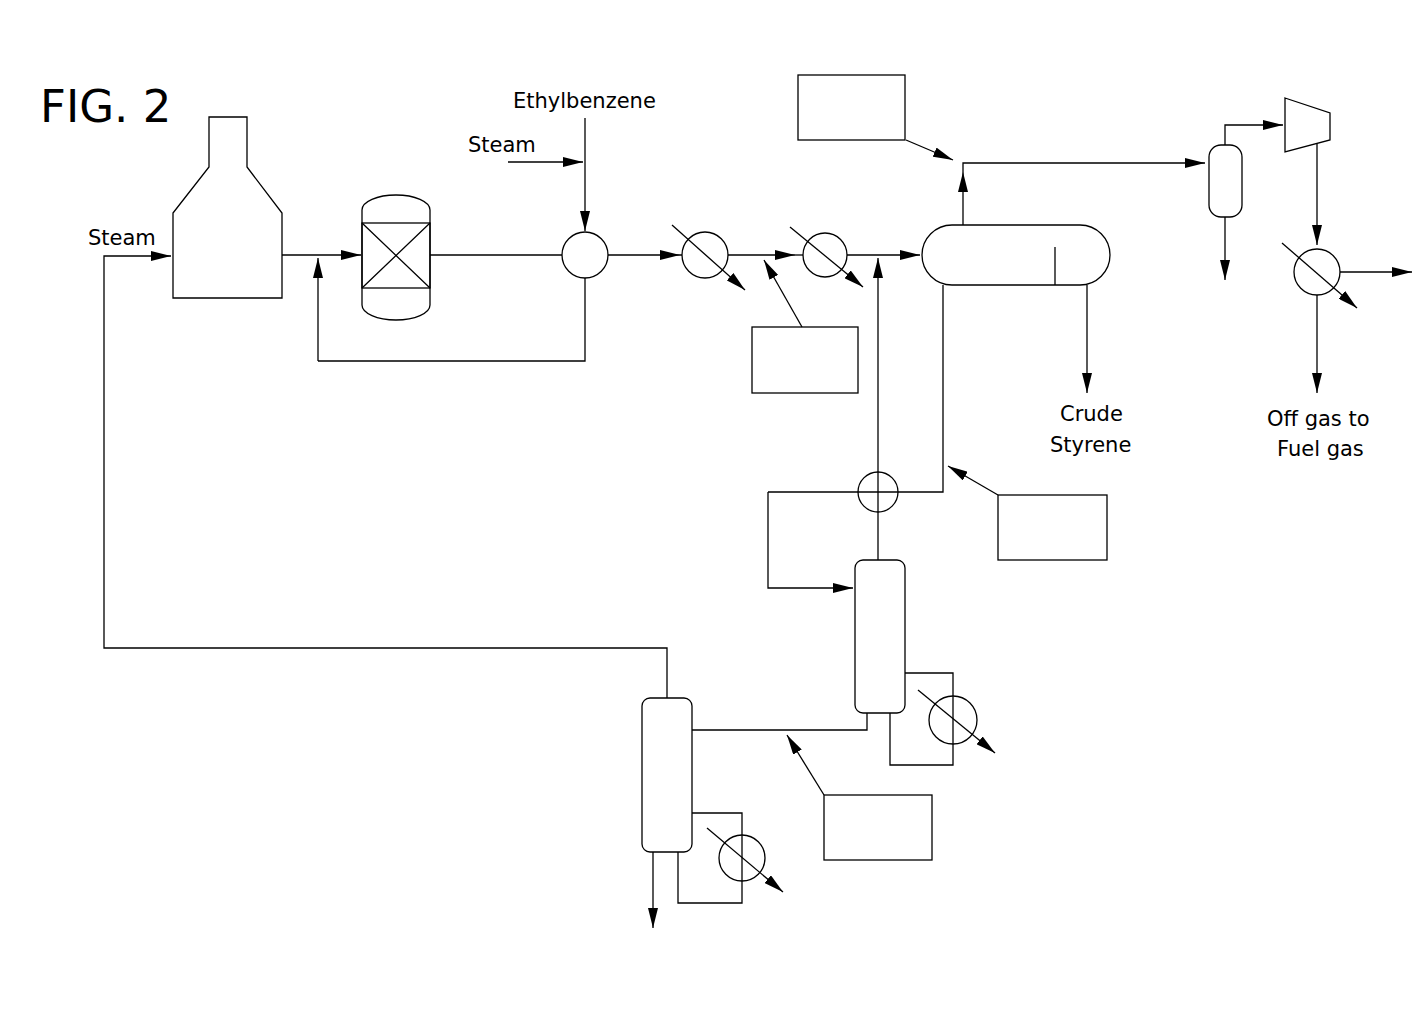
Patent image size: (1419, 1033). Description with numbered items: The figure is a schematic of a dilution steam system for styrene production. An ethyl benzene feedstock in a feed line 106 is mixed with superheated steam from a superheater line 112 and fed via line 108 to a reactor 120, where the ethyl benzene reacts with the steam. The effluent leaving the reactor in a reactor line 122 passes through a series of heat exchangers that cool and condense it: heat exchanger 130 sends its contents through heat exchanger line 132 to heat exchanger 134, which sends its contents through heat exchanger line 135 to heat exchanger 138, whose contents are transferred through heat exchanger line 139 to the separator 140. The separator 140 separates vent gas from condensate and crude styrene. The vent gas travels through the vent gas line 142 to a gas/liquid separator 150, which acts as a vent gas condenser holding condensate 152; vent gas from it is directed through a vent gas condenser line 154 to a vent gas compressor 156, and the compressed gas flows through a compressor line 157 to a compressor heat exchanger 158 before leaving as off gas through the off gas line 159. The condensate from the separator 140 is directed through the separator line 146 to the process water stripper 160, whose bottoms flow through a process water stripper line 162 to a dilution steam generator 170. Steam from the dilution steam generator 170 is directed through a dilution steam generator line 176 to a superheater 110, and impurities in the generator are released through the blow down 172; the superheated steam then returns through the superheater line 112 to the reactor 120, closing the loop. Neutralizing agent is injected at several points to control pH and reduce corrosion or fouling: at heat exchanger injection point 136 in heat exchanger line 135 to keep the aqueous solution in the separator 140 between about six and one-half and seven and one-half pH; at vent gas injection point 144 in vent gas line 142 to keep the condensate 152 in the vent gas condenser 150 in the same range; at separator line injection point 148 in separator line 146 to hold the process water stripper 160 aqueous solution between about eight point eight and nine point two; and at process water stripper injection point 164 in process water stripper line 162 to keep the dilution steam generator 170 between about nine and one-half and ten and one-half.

The feed line 106 is at (453, 363).
The line 108 is at (337, 253).
The superheater 110 is at (193, 190).
The superheater line 112 is at (297, 260).
The reactor 120 is at (400, 194).
The reactor line 122 is at (480, 257).
The heat exchanger 130 is at (575, 276).
The heat exchanger line 132 is at (632, 257).
The heat exchanger 134 is at (707, 280).
The heat exchanger line 135 is at (757, 253).
The heat exchanger injection point 136 is at (806, 393).
The heat exchanger 138 is at (812, 278).
The heat exchanger line 139 is at (858, 253).
The separator 140 is at (1018, 225).
The vent gas line 142 is at (961, 210).
The vent gas injection point 144 is at (798, 105).
The separator line 146 is at (947, 430).
The separator line injection point 148 is at (1107, 532).
The gas/liquid separator 150 is at (1222, 148).
The condensate 152 is at (1222, 240).
The vent gas condenser line 154 is at (1245, 124).
The vent gas compressor 156 is at (1309, 107).
The compressor line 157 is at (1320, 178).
The compressor heat exchanger 158 is at (1338, 255).
The off gas line 159 is at (1320, 350).
The process water stripper 160 is at (906, 638).
The process water stripper line 162 is at (762, 727).
The process water stripper injection point 164 is at (932, 850).
The dilution steam generator 170 is at (642, 803).
The blow down 172 is at (652, 883).
The dilution steam generator line 176 is at (390, 648).